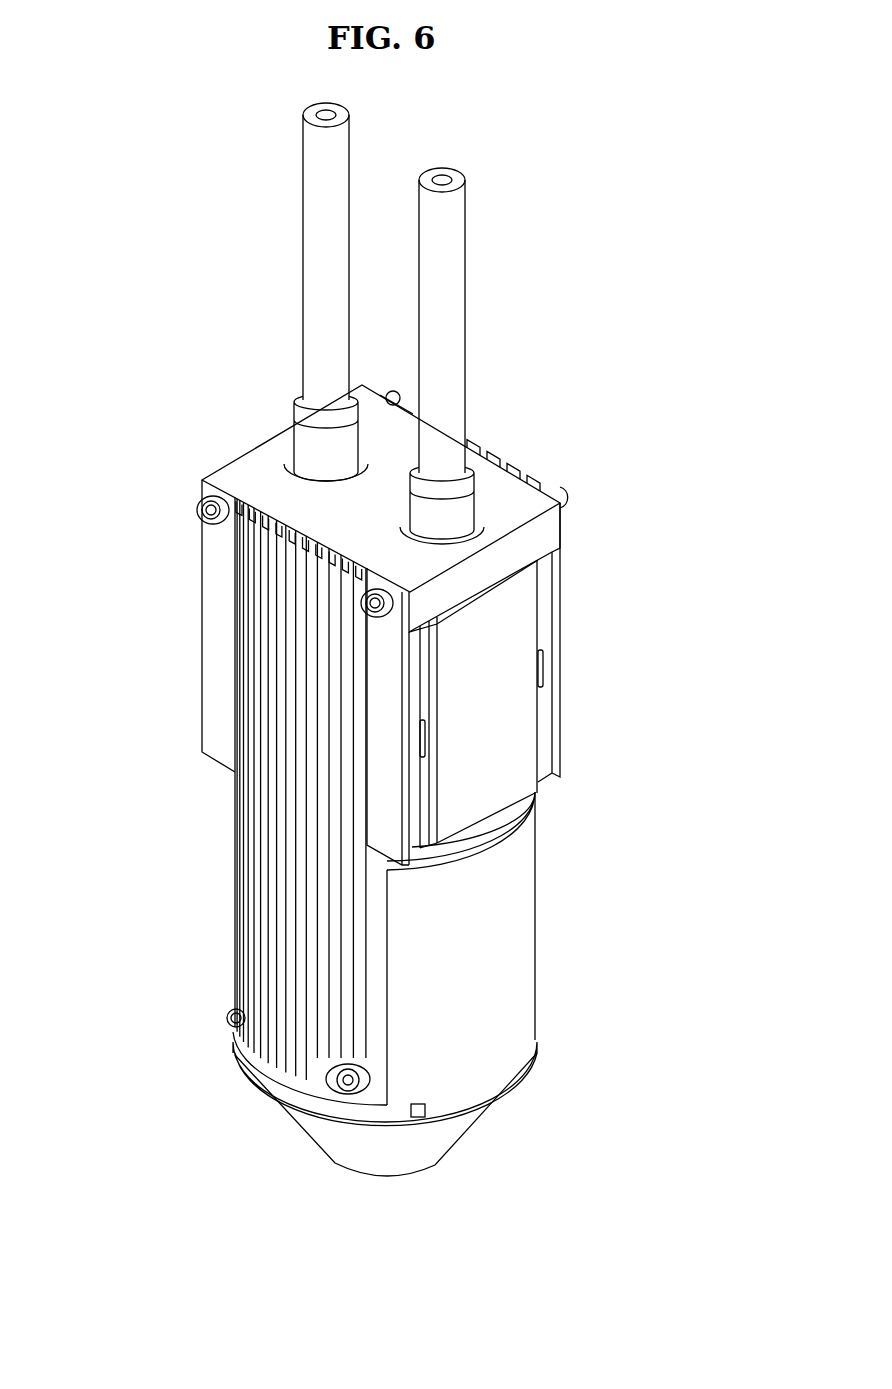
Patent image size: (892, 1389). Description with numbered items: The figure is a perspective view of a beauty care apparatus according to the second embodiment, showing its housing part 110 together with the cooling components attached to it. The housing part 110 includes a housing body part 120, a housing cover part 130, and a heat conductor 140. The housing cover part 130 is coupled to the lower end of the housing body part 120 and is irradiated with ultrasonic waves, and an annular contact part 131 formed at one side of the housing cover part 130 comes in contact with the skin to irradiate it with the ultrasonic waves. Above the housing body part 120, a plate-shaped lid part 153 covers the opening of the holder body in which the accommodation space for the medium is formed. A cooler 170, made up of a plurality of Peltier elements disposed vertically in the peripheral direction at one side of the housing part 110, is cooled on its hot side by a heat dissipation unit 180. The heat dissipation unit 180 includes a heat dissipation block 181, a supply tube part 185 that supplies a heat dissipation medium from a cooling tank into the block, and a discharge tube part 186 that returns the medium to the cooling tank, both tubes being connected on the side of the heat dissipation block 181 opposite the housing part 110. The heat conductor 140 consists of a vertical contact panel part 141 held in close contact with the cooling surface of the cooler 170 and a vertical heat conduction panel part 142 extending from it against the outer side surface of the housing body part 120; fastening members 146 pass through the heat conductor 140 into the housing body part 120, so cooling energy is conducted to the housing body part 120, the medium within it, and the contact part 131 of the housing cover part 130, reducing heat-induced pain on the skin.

The housing part 110 is at (186, 895).
The housing body part 120 is at (510, 952).
The housing cover part 130 is at (500, 1134).
The contact part 131 is at (405, 1180).
The heat conductor 140 is at (255, 720).
The contact panel part 141 is at (278, 625).
The heat conduction panel part 142 is at (272, 935).
The fastening member 146 is at (205, 507).
The lid part 153 is at (492, 820).
The cooler 170 is at (550, 626).
The heat dissipation unit 180 is at (500, 492).
The heat dissipation block 181 is at (472, 715).
The supply tube part 185 is at (327, 262).
The discharge tube part 186 is at (447, 260).